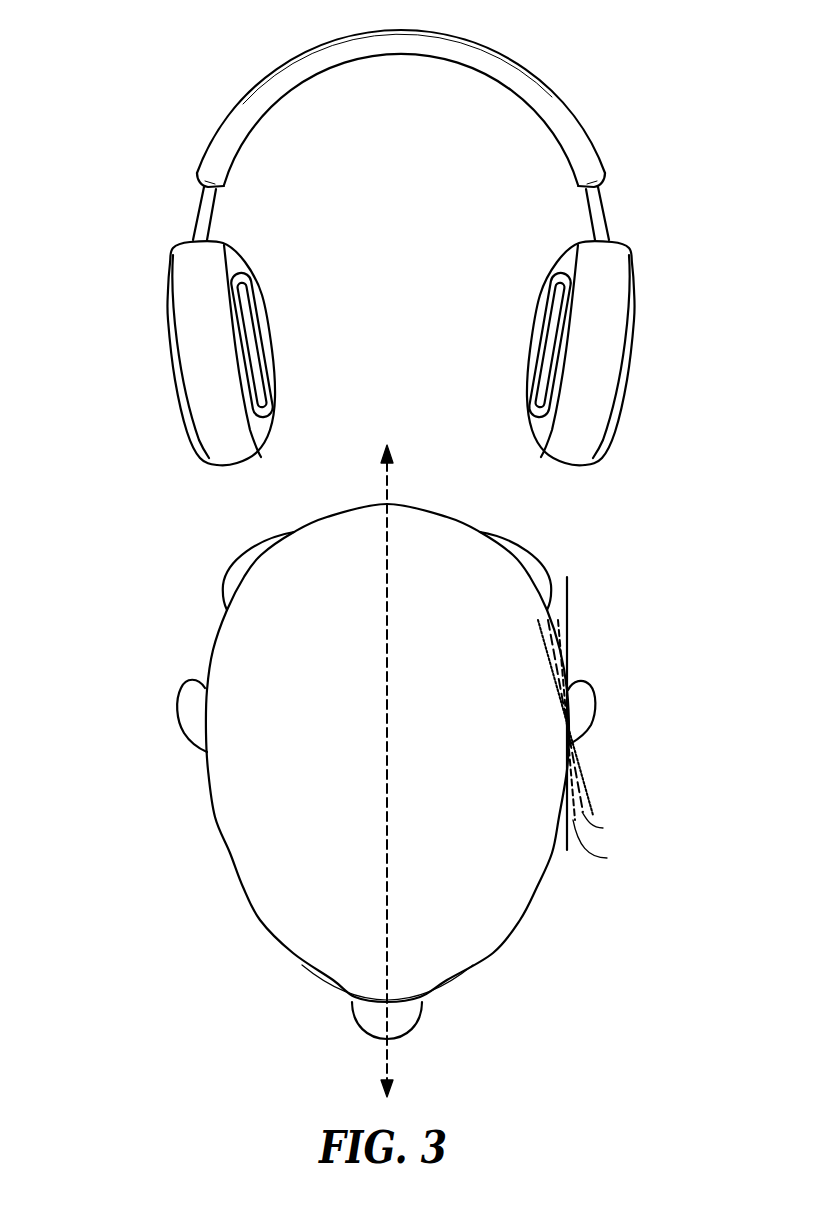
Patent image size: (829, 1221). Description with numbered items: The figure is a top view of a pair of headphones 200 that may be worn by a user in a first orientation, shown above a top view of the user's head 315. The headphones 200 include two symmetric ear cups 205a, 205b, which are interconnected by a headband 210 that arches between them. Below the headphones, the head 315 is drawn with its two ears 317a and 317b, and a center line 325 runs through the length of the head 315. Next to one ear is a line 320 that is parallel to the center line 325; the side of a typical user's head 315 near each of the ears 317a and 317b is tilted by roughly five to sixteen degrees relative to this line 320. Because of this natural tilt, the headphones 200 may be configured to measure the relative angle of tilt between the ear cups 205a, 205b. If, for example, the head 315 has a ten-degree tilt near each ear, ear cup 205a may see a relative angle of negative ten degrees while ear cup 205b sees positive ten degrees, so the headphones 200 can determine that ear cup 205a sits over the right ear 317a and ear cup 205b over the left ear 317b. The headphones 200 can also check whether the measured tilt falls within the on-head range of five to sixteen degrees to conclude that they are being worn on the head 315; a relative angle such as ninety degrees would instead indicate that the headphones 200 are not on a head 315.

The pair of headphones 200 is at (197, 112).
The headband 210 is at (587, 148).
The ear cup 205a is at (190, 292).
The ear cup 205b is at (600, 308).
The head 315 is at (235, 835).
The ear 317a is at (187, 702).
The ear 317b is at (583, 707).
The line 320 is at (570, 607).
The center line 325 is at (389, 717).